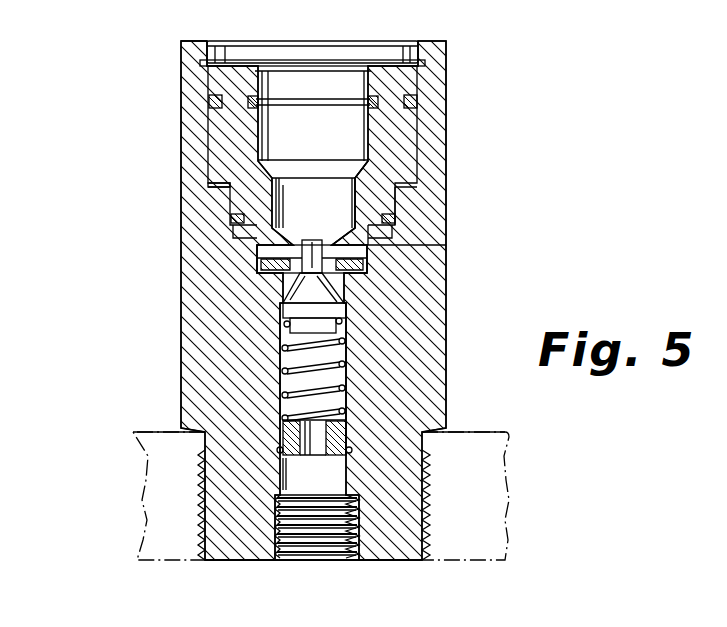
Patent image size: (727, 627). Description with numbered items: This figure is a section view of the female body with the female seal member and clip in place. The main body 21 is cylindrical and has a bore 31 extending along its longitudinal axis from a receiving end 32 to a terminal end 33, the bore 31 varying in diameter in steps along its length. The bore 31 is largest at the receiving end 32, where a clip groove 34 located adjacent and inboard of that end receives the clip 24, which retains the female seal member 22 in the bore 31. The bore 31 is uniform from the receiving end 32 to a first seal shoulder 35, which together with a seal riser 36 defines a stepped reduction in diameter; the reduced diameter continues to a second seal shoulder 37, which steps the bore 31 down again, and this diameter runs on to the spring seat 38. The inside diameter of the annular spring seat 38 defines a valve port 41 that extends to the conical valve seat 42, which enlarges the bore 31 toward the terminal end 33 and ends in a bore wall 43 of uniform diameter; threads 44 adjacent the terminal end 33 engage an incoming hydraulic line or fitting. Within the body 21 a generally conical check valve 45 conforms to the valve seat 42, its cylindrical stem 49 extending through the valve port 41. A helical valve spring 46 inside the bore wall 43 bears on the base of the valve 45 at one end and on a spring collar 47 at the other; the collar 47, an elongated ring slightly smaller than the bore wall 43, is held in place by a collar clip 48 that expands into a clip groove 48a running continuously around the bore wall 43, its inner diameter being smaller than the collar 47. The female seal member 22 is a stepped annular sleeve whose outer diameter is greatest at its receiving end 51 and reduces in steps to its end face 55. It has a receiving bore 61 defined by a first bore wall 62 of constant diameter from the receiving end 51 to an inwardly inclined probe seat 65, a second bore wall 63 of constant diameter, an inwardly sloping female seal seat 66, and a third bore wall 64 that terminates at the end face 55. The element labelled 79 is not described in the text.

The body 21 is at (181, 330).
The female seal member 22 is at (181, 163).
The clip 24 is at (446, 52).
The bore 31 is at (343, 52).
The receiving end 32 is at (415, 45).
The terminal end 33 is at (340, 562).
The clip groove 34 is at (446, 77).
The first seal shoulder 35 is at (181, 193).
The seal riser 36 is at (181, 228).
The second seal shoulder 37 is at (261, 268).
The spring seat 38 is at (280, 350).
The valve port 41 is at (343, 280).
The valve seat 42 is at (348, 303).
The bore wall 43 is at (350, 340).
The threads 44 is at (290, 560).
The check valve 45 is at (350, 318).
The valve spring 46 is at (287, 372).
The spring collar 47 is at (283, 437).
The collar clip 48 is at (359, 468).
The clip groove 48a is at (352, 451).
The stem 49 is at (280, 318).
The receiving end 51 is at (181, 80).
The end face 55 is at (368, 264).
The receiving bore 61 is at (181, 139).
The first bore wall 62 is at (420, 136).
The second bore wall 63 is at (375, 198).
The third bore wall 64 is at (368, 250).
The probe seat 65 is at (372, 165).
The female seal seat 66 is at (372, 225).
The line 79 is at (292, 2).